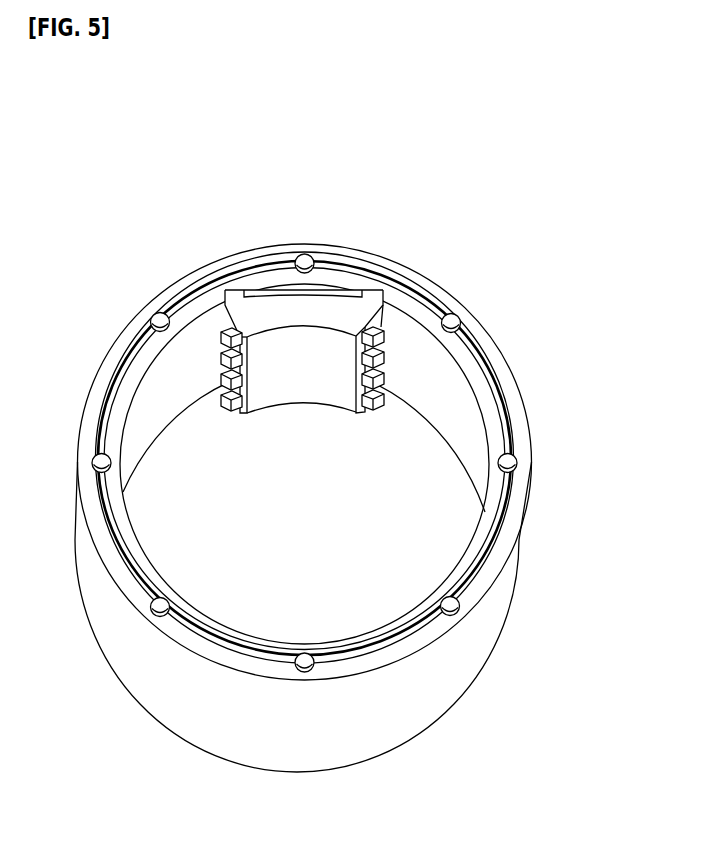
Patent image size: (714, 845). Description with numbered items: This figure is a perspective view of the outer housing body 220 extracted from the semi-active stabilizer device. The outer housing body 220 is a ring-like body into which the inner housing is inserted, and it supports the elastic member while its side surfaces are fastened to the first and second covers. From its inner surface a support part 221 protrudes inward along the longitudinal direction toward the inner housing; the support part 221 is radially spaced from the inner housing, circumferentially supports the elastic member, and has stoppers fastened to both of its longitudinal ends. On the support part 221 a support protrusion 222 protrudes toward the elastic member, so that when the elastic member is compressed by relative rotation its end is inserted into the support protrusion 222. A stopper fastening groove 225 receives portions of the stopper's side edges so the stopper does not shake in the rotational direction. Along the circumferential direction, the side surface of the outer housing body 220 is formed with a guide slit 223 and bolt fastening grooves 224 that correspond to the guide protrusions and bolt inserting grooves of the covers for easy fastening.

The outer housing body 220 is at (535, 137).
The support part 221 is at (320, 390).
The support protrusion 222 is at (383, 382).
The guide slit 223 is at (385, 648).
The bolt fastening groove 224 is at (305, 668).
The stopper fastening groove 225 is at (370, 290).